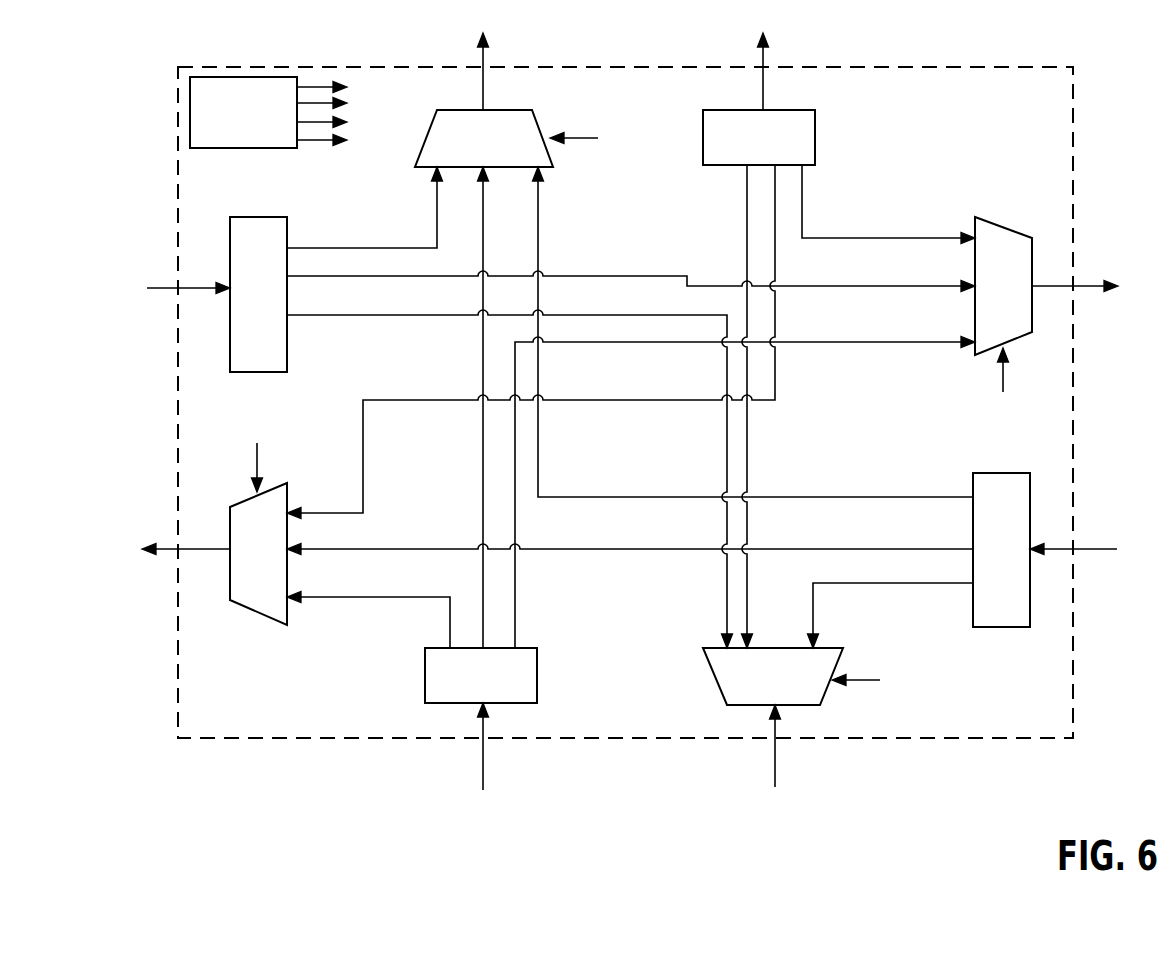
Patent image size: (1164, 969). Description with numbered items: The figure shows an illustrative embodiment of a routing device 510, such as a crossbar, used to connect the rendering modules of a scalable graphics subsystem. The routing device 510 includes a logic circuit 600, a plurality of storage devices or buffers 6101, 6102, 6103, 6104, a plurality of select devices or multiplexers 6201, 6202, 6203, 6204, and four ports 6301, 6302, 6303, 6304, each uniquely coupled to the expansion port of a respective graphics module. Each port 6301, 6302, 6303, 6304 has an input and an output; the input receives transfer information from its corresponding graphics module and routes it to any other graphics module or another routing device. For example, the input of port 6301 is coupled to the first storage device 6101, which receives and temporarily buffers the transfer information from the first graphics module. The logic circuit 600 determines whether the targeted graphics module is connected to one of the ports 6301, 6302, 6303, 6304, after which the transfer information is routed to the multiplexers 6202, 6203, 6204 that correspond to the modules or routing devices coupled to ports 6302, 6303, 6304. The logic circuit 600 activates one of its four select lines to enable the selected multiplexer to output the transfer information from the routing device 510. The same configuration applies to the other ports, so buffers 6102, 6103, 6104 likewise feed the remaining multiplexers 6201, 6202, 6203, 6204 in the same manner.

The routing device 510 is at (178, 665).
The logic circuit 600 is at (247, 148).
The first storage device 6101 is at (530, 648).
The storage device 6102 is at (973, 622).
The storage device 6103 is at (230, 360).
The storage device 6104 is at (797, 110).
The multiplexer 6201 is at (832, 647).
The multiplexer 6202 is at (993, 218).
The multiplexer 6203 is at (214, 522).
The multiplexer 6204 is at (512, 108).
The port 6301 is at (641, 798).
The port 6302 is at (1140, 436).
The port 6303 is at (140, 421).
The port 6304 is at (641, 54).